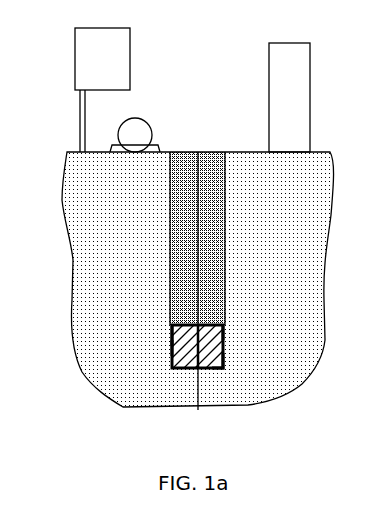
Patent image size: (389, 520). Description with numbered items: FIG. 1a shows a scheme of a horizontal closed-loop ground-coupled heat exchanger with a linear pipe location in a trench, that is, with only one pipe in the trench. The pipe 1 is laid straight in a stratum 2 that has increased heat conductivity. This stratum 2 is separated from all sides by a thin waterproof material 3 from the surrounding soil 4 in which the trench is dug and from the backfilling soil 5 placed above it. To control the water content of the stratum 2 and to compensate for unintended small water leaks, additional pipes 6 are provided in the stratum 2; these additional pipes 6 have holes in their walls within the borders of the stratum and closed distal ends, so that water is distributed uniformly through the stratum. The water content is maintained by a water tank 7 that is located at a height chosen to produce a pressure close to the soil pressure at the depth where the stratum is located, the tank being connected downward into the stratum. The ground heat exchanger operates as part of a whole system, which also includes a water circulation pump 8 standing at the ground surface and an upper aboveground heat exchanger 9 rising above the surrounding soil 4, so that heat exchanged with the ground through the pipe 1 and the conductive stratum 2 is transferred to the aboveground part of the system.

The pipe 1 is at (172, 369).
The stratum 2 is at (172, 348).
The thin waterproof material 3 is at (171, 346).
The surrounding soil 4 is at (122, 270).
The backfilling soil 5 is at (172, 247).
The additional pipes 6 is at (224, 330).
The water tank 7 is at (88, 60).
The water circulation pump 8 is at (140, 135).
The upper aboveground heat exchanger 9 is at (295, 92).